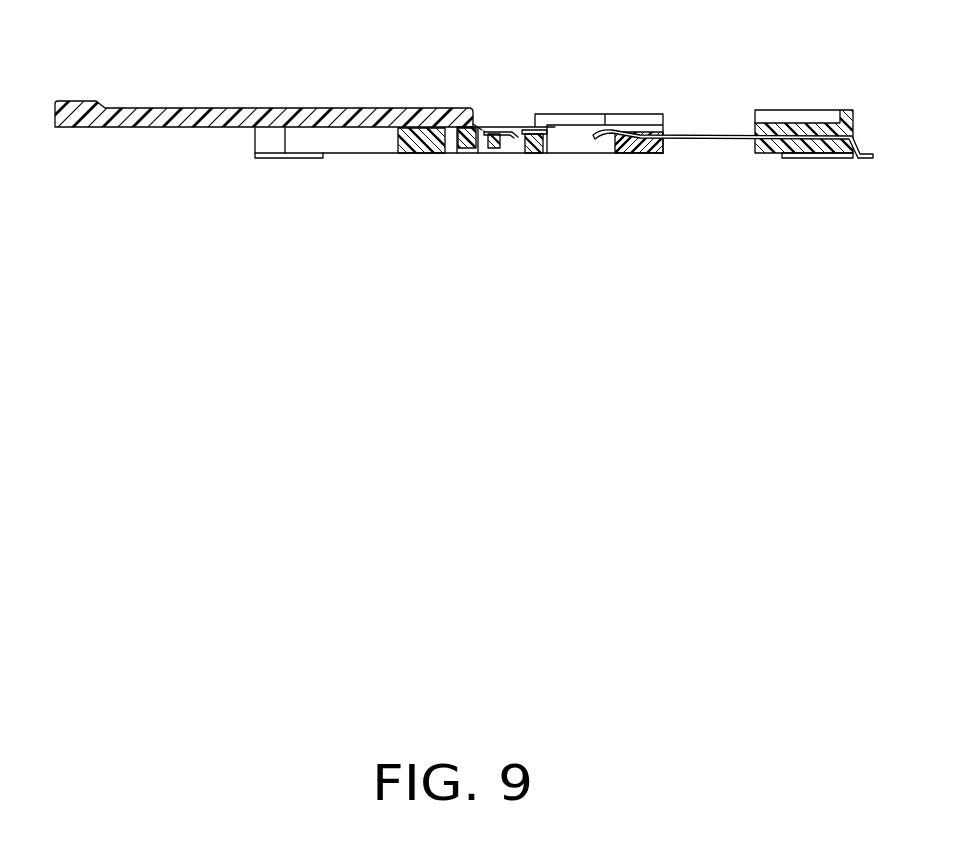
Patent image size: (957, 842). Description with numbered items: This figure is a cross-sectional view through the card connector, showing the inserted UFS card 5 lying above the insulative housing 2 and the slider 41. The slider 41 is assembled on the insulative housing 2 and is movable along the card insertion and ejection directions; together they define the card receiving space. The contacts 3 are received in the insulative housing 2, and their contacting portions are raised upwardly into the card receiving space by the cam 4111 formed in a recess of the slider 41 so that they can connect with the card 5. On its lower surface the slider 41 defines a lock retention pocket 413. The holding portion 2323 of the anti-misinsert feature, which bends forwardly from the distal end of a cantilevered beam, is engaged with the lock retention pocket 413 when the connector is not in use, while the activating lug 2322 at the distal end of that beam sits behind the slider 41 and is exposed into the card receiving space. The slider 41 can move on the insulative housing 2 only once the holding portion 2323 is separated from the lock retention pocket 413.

The UFS card 5 is at (282, 112).
The holding portion 2323 is at (470, 122).
The activating lug 2322 is at (512, 145).
The lock retention pocket 413 is at (514, 136).
The cam 4111 is at (552, 133).
The slider 41 is at (630, 153).
The contacts 3 is at (720, 135).
The insulative housing 2 is at (795, 132).